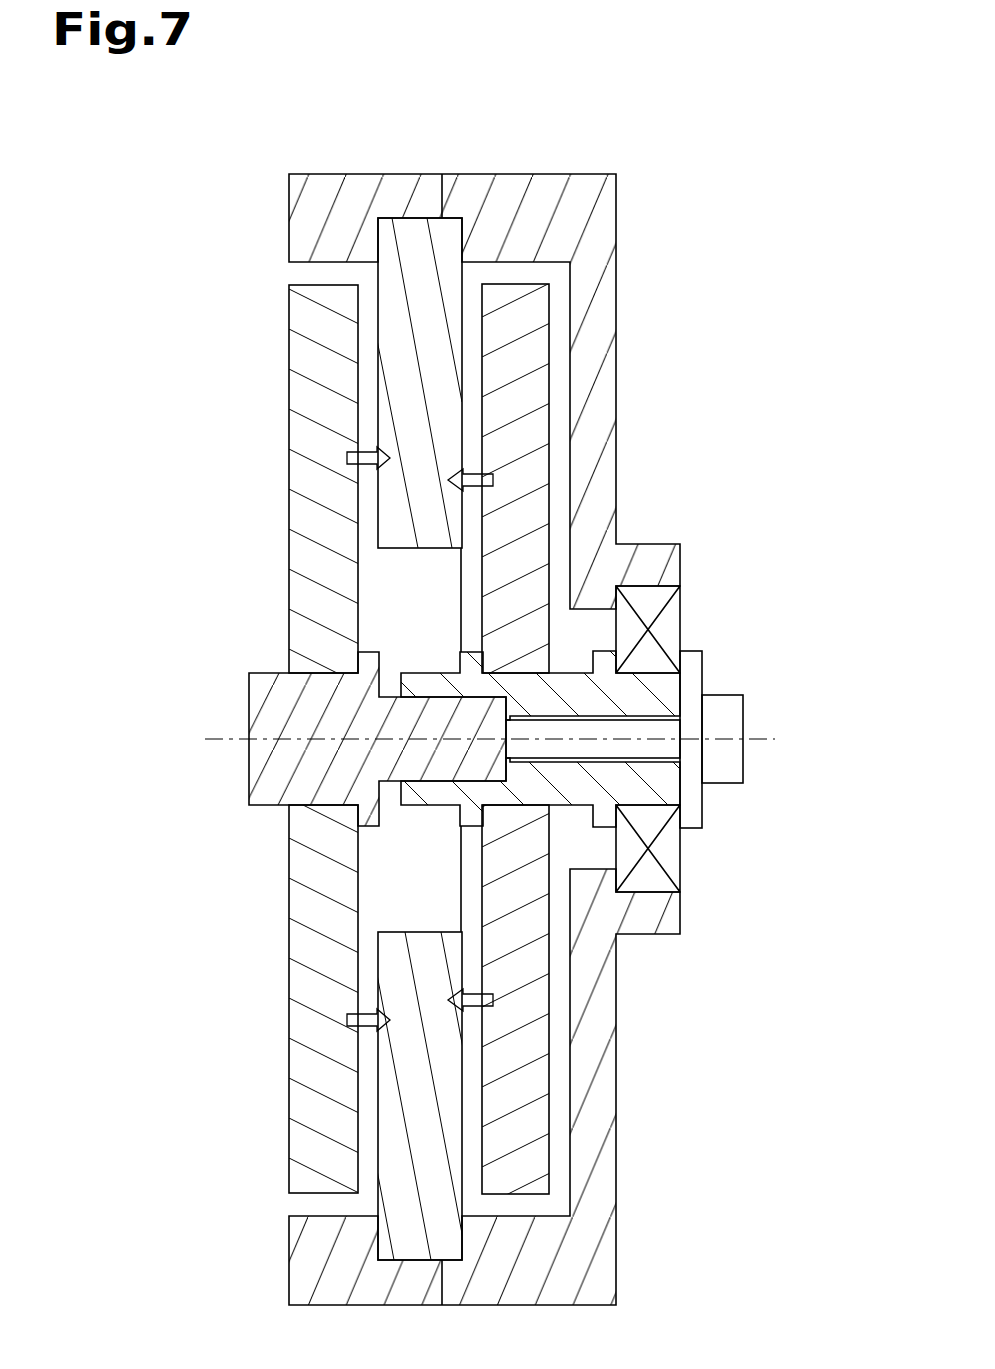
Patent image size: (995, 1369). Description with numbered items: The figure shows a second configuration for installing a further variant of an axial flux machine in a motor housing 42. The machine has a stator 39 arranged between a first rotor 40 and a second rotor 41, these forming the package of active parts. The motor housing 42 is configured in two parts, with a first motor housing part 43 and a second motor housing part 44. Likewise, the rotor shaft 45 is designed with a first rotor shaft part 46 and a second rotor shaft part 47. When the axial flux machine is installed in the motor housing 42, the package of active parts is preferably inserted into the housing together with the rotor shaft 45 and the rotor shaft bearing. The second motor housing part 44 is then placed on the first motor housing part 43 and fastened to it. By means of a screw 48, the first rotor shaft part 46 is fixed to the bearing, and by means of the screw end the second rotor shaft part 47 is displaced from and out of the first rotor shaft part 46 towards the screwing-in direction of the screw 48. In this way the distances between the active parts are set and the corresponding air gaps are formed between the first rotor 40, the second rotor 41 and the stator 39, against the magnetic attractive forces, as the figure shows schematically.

The stator 39 is at (416, 250).
The first rotor 40 is at (532, 347).
The second rotor 41 is at (310, 397).
The motor housing 42 is at (590, 128).
The first motor housing part 43 is at (590, 247).
The second motor housing part 44 is at (324, 200).
The rotor shaft 45 is at (395, 847).
The first rotor shaft part 46 is at (648, 702).
The second rotor shaft part 47 is at (268, 782).
The screw 48 is at (722, 755).